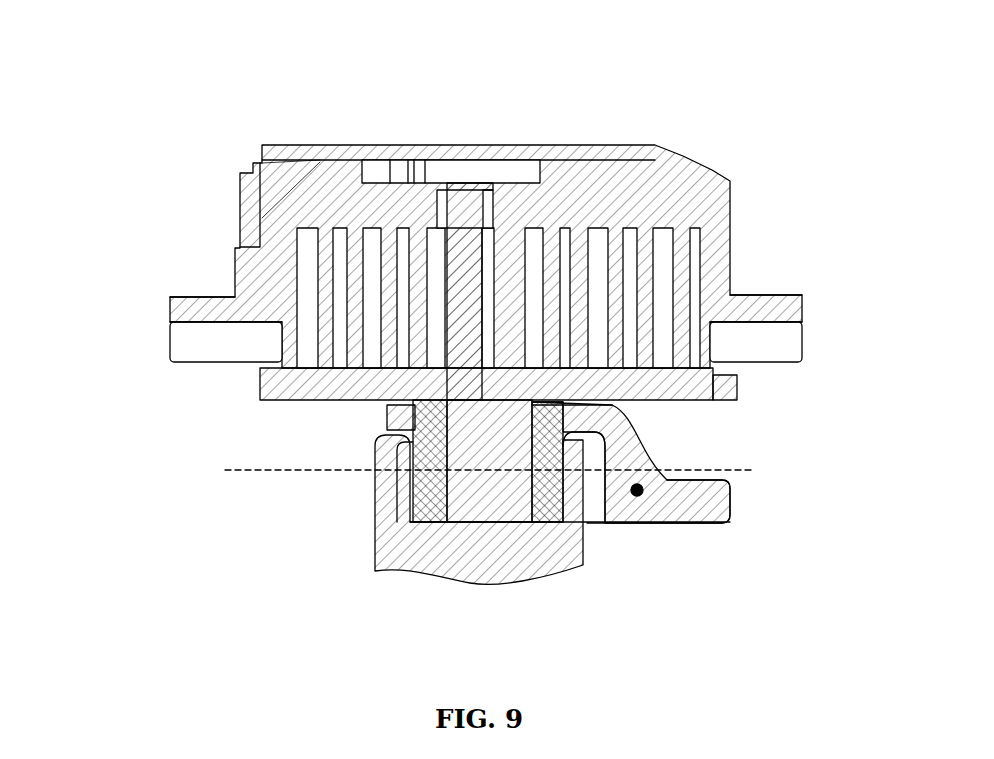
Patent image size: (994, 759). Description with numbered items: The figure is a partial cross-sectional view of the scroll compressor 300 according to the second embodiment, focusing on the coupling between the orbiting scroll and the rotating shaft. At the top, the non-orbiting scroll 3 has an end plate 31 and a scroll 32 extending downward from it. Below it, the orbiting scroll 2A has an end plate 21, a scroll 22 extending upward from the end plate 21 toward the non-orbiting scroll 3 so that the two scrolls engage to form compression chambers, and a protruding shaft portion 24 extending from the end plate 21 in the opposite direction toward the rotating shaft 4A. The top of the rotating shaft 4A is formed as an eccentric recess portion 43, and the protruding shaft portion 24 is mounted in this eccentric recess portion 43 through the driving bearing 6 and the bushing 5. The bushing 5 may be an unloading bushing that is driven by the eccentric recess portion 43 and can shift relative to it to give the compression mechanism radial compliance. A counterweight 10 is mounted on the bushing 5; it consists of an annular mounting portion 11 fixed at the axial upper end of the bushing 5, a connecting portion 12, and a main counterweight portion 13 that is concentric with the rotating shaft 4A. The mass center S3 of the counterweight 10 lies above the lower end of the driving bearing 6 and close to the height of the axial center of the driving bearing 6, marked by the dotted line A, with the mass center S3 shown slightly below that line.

The scroll compressor 300 is at (774, 97).
The non-orbiting scroll 3 is at (115, 192).
The end plate 31 is at (333, 198).
The scroll 32 is at (352, 258).
The orbiting scroll 2A is at (80, 305).
The scroll 22 is at (325, 312).
The end plate 21 is at (335, 380).
The protruding shaft portion 24 is at (477, 430).
The rotating shaft 4A is at (563, 547).
The bushing 5 is at (427, 493).
The eccentric recess portion 43 is at (437, 520).
The driving bearing 6 is at (450, 505).
The counterweight 10 is at (867, 410).
The annular mounting portion 11 is at (597, 421).
The connecting portion 12 is at (627, 448).
The main counterweight portion 13 is at (697, 505).
The mass center S3 is at (640, 496).
The dotted line A is at (290, 468).